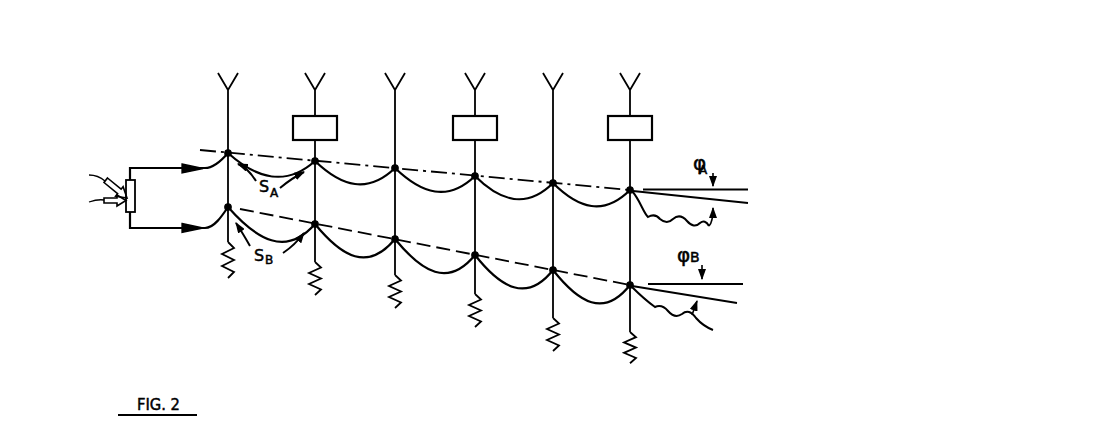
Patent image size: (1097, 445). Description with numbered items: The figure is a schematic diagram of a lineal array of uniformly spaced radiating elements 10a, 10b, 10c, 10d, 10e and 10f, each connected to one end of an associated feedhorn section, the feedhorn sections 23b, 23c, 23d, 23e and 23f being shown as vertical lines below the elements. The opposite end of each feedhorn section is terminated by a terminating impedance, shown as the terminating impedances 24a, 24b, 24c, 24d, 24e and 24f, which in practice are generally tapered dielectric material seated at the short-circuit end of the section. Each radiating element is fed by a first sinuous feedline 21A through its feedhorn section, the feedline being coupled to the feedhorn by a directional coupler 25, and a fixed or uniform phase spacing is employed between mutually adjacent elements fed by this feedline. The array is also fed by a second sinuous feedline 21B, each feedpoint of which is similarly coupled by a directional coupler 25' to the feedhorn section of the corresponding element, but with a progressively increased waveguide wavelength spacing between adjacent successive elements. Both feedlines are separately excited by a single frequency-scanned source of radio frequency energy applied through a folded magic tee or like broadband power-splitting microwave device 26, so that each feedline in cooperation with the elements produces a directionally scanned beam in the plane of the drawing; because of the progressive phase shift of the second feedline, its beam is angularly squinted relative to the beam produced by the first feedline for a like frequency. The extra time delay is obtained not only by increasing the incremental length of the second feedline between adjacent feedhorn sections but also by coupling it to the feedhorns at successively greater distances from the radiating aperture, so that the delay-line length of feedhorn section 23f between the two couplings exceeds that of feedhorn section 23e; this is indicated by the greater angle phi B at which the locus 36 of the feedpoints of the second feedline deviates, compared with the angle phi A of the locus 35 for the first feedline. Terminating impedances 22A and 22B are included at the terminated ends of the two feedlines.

The radiating element 10a is at (230, 130).
The radiating element 10b is at (315, 107).
The radiating element 10c is at (396, 110).
The radiating element 10d is at (475, 114).
The radiating element 10e is at (553, 118).
The radiating element 10f is at (630, 121).
The first sinuous feedline 21A is at (594, 208).
The second sinuous feedline 21B is at (597, 303).
The terminating impedance 22A is at (713, 230).
The terminating impedance 22B is at (713, 330).
The feedhorn section 23b is at (316, 176).
The feedhorn section 23c is at (396, 207).
The feedhorn section 23d is at (474, 224).
The feedhorn section 23e is at (552, 228).
The feedhorn section 23f is at (629, 262).
The terminating impedance 24a is at (226, 264).
The terminating impedance 24b is at (311, 286).
The terminating impedance 24c is at (393, 297).
The terminating impedance 24d is at (473, 313).
The terminating impedance 24e is at (548, 336).
The terminating impedance 24f is at (632, 340).
The directional coupler 25 is at (243, 139).
The directional coupler 25' is at (208, 200).
The folded magic tee 26 is at (135, 199).
The locus of feedpoints of the first feedline 35 is at (738, 201).
The locus of feedpoints of the second feedline 36 is at (735, 298).